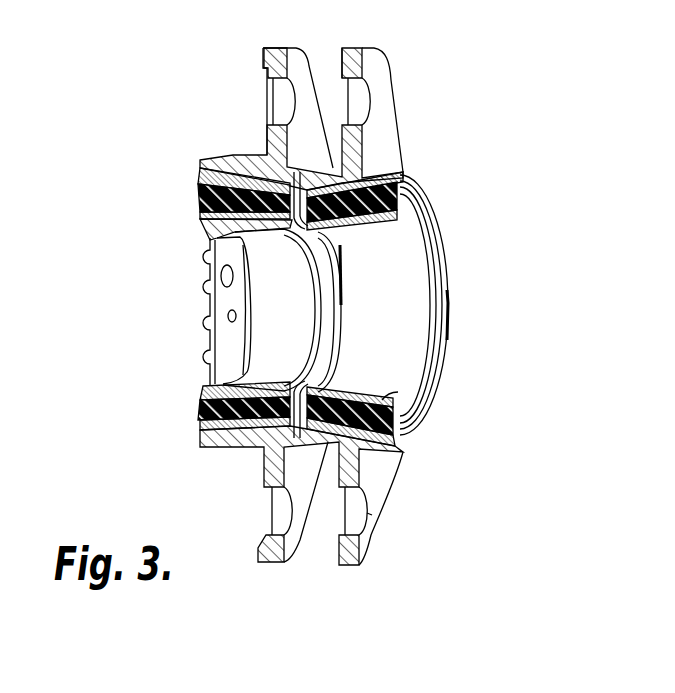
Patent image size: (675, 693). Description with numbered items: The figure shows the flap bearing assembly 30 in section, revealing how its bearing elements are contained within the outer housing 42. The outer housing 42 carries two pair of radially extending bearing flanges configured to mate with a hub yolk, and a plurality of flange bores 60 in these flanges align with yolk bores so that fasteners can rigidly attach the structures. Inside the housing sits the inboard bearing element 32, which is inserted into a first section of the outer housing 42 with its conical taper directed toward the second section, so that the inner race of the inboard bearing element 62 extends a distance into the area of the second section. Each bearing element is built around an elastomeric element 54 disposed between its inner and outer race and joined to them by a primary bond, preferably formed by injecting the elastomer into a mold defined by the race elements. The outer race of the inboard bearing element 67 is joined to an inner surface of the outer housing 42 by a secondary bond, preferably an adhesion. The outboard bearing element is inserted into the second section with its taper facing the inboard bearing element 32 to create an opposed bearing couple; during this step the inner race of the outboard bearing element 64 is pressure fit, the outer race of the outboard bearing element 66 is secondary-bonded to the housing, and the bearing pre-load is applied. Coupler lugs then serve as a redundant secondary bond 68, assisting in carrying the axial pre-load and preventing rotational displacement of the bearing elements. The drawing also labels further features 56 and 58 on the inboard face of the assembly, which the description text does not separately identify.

The flap bearing assembly 30 is at (494, 106).
The inboard bearing element 32 is at (428, 232).
The outer housing 42 is at (405, 180).
The elastomeric element 54 is at (196, 430).
The holes 56 is at (208, 276).
The hub face 58 is at (207, 366).
The flange bores 60 is at (367, 513).
The inner race of the inboard bearing element 62 is at (398, 395).
The inner race of the outboard bearing element 64 is at (250, 236).
The outer race of the outboard bearing element 66 is at (200, 162).
The outer race of the inboard bearing element 67 is at (408, 196).
The redundant secondary bond 68 is at (198, 200).